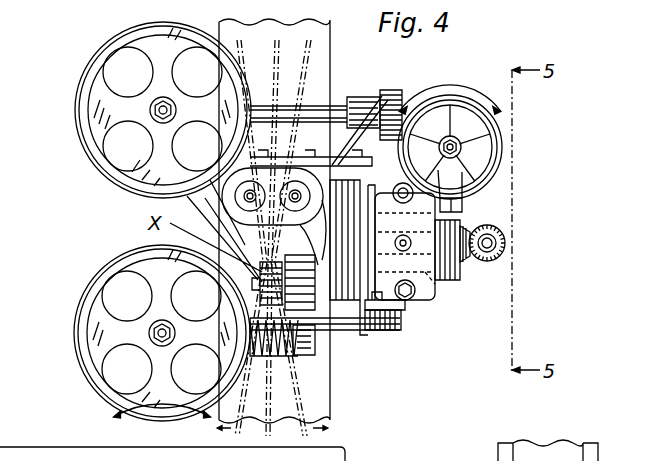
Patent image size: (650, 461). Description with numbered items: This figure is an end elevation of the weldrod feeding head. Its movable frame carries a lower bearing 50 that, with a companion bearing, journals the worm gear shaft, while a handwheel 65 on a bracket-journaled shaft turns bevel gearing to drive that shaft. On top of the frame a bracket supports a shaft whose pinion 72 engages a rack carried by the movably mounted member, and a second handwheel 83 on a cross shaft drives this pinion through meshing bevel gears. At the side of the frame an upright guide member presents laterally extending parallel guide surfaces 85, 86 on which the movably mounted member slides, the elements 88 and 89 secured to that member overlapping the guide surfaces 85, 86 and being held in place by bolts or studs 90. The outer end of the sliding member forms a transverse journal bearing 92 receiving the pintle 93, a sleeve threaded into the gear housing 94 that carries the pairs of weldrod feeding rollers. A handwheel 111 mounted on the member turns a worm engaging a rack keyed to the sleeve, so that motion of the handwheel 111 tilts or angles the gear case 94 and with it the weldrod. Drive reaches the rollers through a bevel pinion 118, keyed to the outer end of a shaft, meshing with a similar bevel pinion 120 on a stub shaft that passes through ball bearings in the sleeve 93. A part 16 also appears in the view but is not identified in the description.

The column / tape support 16 is at (330, 66).
The bearing 50 is at (300, 352).
The handwheel 65 is at (76, 324).
The pinion 72 is at (391, 92).
The handwheel 83 is at (78, 100).
The guide surface 85 is at (474, 188).
The guide surface 86 is at (383, 304).
The element 88 is at (478, 131).
The element 89 is at (372, 334).
The bolts or studs 90 is at (400, 326).
The transverse journal bearing 92 is at (440, 212).
The pintle 93 is at (436, 285).
The gear housing 94 is at (284, 300).
The handwheel 111 is at (501, 150).
The bevel pinion 118 is at (506, 247).
The bevel pinion 120 is at (466, 262).